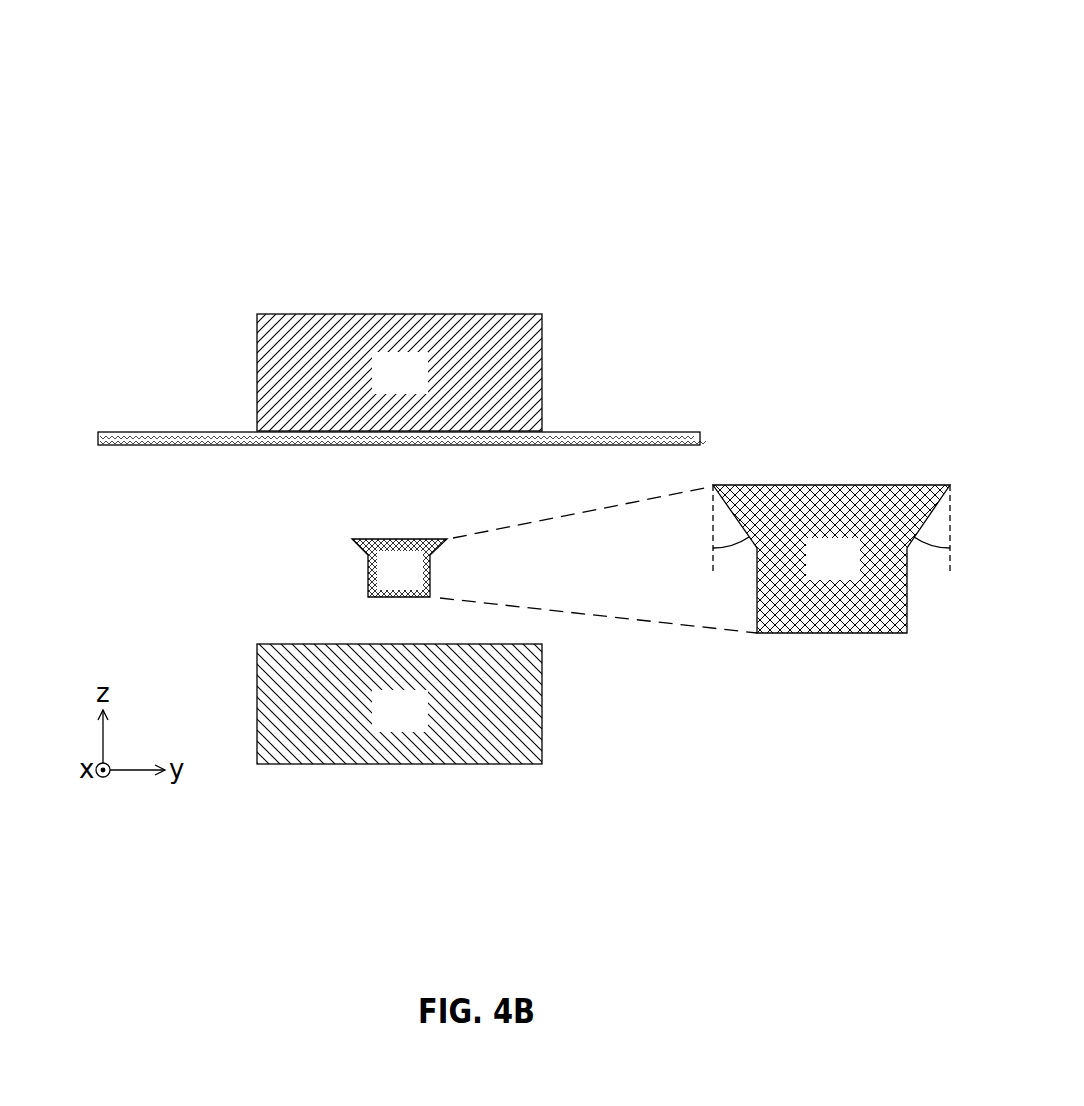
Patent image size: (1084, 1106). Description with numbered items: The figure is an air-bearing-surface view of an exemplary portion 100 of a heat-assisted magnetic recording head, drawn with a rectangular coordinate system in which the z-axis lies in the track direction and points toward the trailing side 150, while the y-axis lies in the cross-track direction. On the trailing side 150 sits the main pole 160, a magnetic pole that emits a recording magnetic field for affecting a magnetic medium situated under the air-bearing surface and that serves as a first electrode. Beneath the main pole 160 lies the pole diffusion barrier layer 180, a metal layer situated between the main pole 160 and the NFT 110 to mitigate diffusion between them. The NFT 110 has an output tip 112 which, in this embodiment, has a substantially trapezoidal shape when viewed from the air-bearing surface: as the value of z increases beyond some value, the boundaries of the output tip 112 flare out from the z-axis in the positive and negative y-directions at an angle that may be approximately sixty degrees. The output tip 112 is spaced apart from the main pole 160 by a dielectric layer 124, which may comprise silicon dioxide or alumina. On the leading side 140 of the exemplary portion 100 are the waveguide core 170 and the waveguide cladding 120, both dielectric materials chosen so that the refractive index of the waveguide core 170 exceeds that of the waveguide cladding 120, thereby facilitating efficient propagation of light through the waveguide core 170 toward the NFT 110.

The exemplary portion 100 is at (323, 81).
The trailing side 150 is at (395, 236).
The main pole 160 is at (378, 390).
The pole diffusion barrier layer 180 is at (147, 432).
The NFT 110 is at (333, 562).
The output tip 112 is at (379, 587).
The dielectric layer 124 is at (378, 505).
The waveguide cladding 120 is at (378, 634).
The leading side 140 is at (411, 831).
The waveguide core 170 is at (378, 728).